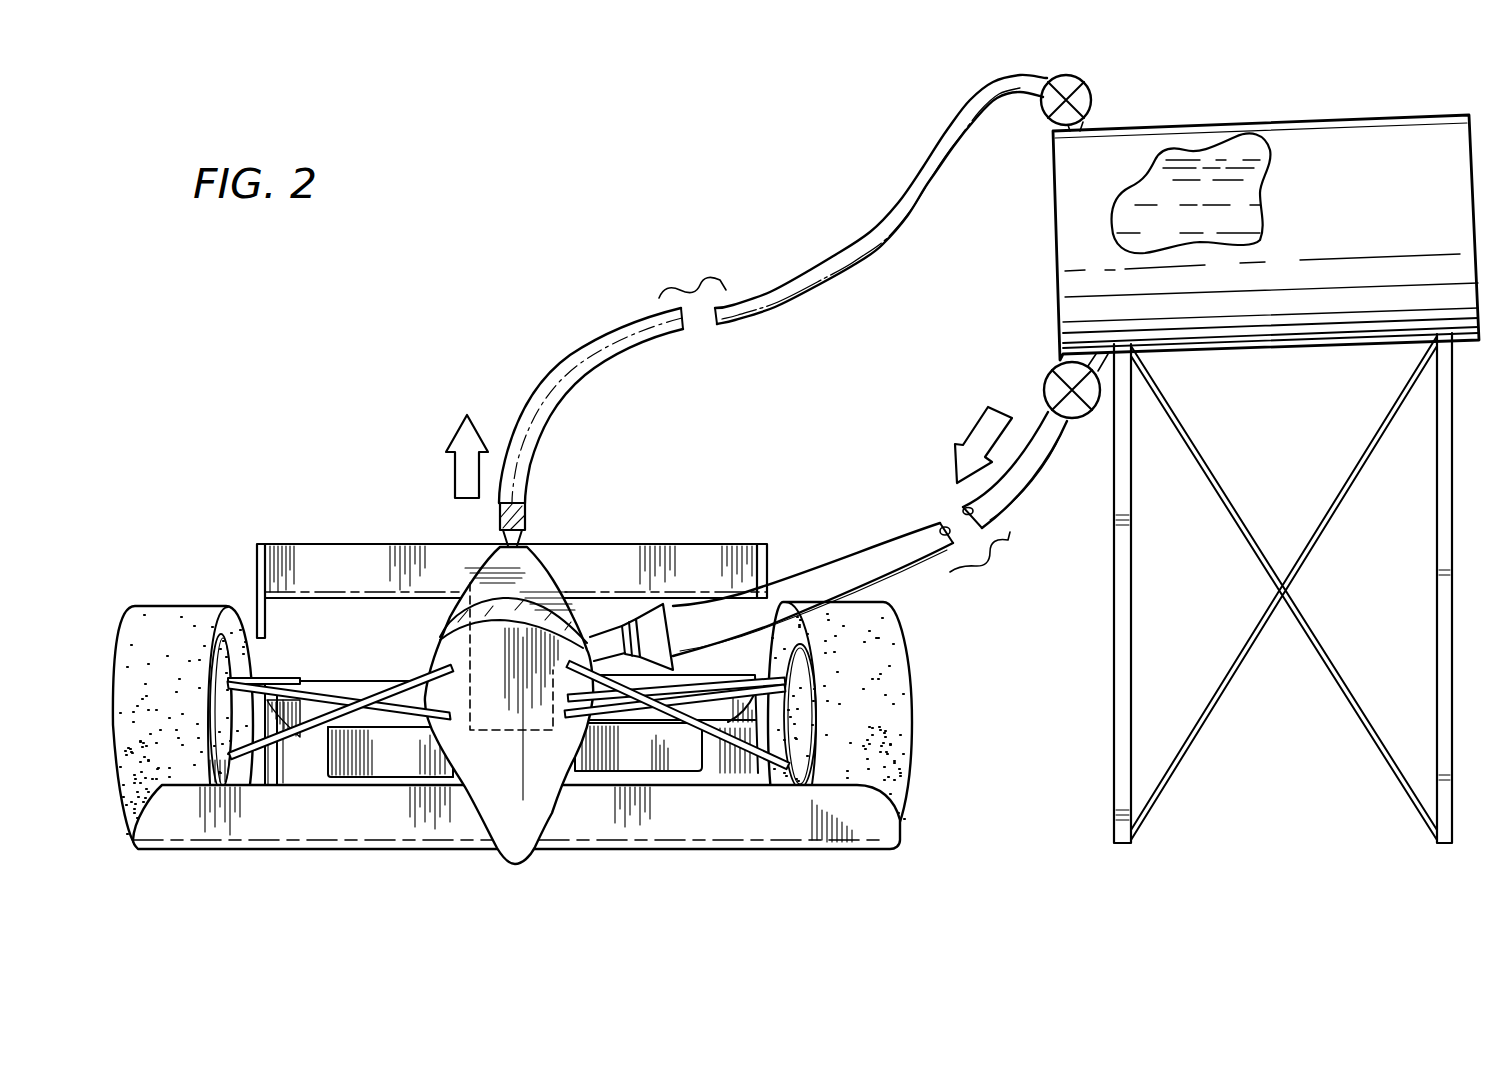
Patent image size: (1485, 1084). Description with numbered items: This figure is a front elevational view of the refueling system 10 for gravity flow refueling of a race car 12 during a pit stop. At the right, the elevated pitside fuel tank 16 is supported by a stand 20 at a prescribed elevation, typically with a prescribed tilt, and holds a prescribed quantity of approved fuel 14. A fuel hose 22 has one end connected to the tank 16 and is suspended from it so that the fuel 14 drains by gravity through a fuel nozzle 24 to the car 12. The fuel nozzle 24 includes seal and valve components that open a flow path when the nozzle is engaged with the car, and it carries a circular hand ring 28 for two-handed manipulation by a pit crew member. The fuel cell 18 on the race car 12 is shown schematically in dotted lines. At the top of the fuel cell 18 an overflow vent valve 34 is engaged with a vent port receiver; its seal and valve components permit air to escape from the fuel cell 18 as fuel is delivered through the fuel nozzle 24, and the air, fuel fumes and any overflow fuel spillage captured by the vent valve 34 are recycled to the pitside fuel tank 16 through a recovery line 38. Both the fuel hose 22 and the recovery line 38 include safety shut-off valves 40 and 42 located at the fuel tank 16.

The refueling system 10 is at (749, 233).
The race car 12 is at (512, 680).
The fuel 14 is at (1238, 153).
The pitside fuel tank 16 is at (1259, 323).
The fuel cell 18 is at (531, 745).
The stand 20 is at (1113, 705).
The fuel hose 22 is at (1035, 486).
The fuel nozzle 24 is at (601, 629).
The circular hand ring 28 is at (674, 607).
The overflow vent valve 34 is at (535, 517).
The recovery line 38 is at (768, 303).
The safety shut-off valve 40 is at (1043, 384).
The safety shut-off valve 42 is at (1092, 103).